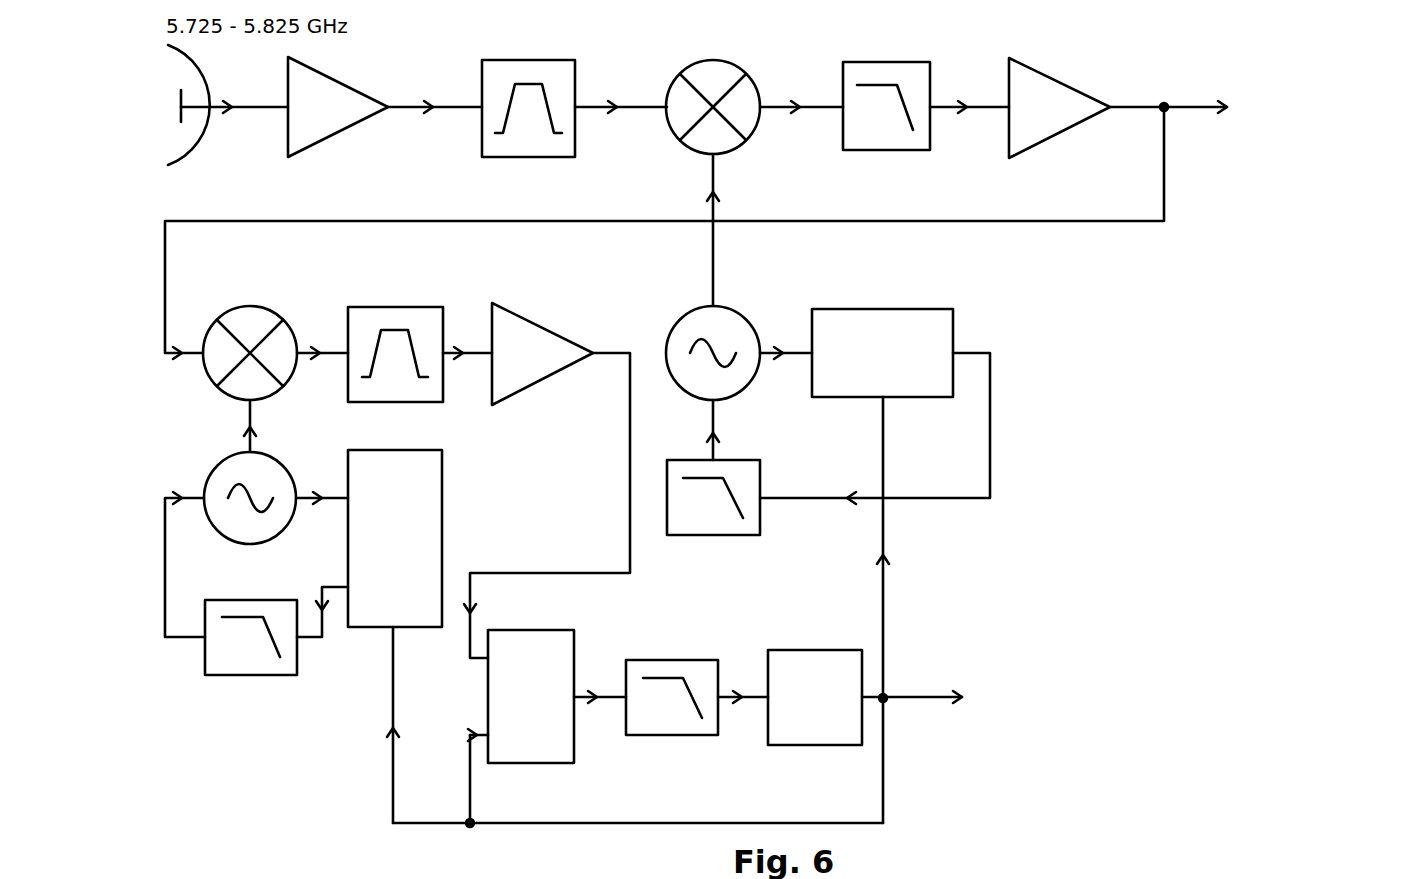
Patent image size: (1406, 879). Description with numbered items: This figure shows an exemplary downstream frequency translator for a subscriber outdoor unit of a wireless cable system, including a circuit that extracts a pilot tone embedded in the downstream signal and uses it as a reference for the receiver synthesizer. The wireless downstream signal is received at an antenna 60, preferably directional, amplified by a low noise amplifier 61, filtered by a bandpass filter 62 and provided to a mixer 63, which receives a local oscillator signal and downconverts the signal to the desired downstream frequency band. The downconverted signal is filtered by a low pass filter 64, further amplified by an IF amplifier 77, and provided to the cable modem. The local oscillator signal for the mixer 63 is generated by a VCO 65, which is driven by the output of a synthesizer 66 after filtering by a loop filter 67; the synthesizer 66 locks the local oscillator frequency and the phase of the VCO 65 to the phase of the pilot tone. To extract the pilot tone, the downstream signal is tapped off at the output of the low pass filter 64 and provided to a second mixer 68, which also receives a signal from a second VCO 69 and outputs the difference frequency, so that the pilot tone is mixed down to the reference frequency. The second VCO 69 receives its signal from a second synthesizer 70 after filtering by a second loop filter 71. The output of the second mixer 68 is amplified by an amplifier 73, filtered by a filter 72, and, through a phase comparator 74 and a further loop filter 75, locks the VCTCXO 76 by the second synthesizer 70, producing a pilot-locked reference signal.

The antenna 60 is at (198, 63).
The low noise amplifier 61 is at (348, 83).
The bandpass filter 62 is at (562, 60).
The mixer 63 is at (735, 60).
The low pass filter 64 is at (898, 62).
The IF amplifier 77 is at (1048, 75).
The VCO 65 is at (732, 307).
The synthesizer 66 is at (907, 309).
The loop filter 67 is at (730, 460).
The second mixer 68 is at (272, 307).
The second VCO 69 is at (222, 455).
The second synthesizer 70 is at (442, 507).
The second loop filter 71 is at (298, 660).
The filter 72 is at (413, 307).
The amplifier 73 is at (538, 320).
The phase comparator 74 is at (543, 630).
The loop filter 75 is at (685, 660).
The VCTCXO 76 is at (808, 650).